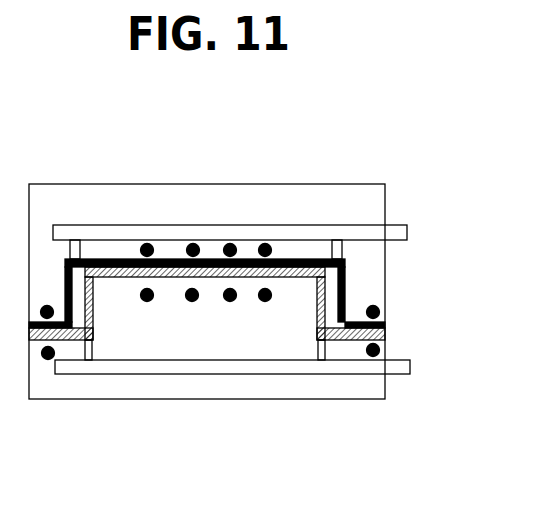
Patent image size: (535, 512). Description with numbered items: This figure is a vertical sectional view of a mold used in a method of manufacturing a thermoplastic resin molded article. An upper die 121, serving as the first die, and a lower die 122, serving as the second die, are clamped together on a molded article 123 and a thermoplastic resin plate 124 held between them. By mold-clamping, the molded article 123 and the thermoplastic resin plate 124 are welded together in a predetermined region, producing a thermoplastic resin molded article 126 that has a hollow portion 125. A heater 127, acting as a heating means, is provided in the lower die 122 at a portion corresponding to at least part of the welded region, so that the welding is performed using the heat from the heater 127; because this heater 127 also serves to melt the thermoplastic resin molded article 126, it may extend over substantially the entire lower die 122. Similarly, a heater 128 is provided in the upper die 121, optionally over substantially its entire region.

The upper die 121 is at (310, 200).
The lower die 122 is at (220, 398).
The molded article (A) 123 is at (332, 308).
The thermoplastic resin plate (B) 124 is at (335, 338).
The hollow portion 125 is at (345, 298).
The thermoplastic resin molded article 126 is at (106, 261).
The heater 127 is at (146, 302).
The heater 128 is at (187, 243).